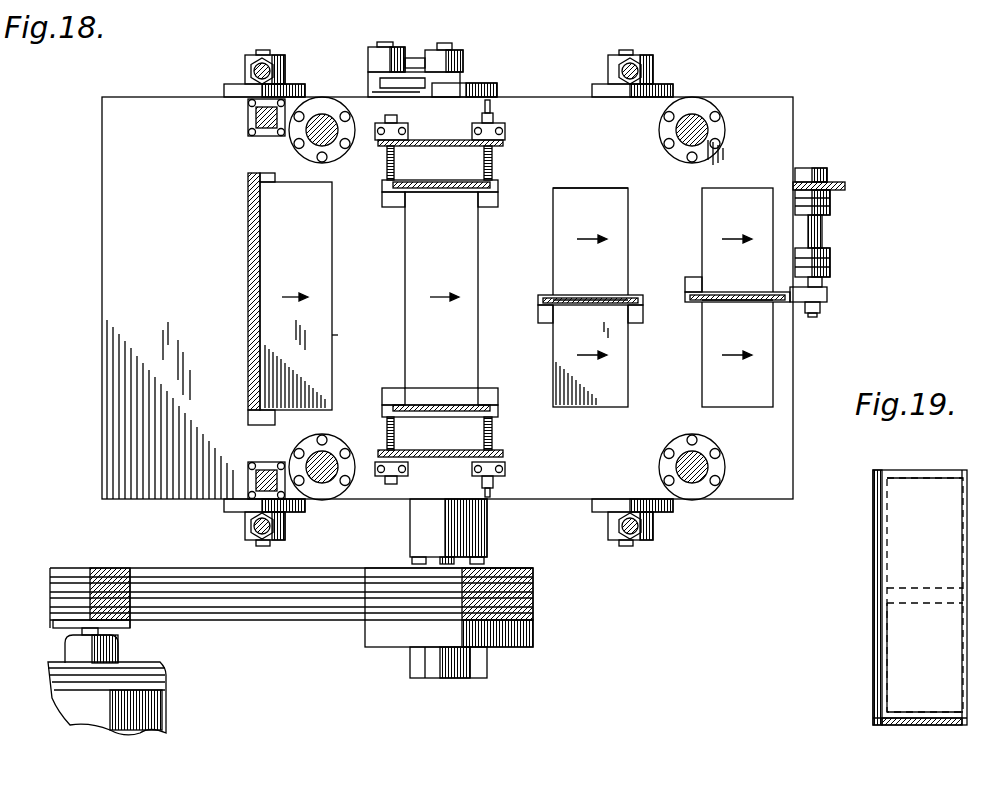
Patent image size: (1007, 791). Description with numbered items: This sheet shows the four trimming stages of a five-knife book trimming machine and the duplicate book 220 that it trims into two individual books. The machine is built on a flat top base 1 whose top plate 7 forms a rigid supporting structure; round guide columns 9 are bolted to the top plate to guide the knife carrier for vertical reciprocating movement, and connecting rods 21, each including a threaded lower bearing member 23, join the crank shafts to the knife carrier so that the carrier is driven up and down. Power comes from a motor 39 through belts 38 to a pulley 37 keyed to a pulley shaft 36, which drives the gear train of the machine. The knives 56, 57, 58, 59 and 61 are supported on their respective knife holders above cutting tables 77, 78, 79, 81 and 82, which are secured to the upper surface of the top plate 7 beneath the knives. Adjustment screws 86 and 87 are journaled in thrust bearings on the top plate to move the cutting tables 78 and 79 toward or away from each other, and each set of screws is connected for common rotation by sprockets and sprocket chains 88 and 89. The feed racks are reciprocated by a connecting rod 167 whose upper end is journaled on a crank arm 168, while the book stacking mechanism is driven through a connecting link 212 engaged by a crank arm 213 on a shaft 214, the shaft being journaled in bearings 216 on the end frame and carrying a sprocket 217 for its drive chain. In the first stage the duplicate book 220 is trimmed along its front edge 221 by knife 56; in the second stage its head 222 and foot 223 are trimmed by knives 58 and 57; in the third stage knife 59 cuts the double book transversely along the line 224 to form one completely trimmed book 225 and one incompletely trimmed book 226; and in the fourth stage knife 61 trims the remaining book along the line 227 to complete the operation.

In FIG. 18, the flat top base 1 is at (102, 160).
In FIG. 18, the top plate 7 is at (125, 199).
In FIG. 18, the guide columns 9 is at (320, 117).
In FIG. 18, the connecting rods 21 is at (250, 72).
In FIG. 18, the lower bearing member 23 is at (245, 62).
In FIG. 18, the pulley shaft 36 is at (440, 556).
In FIG. 18, the pulley 37 is at (535, 636).
In FIG. 18, the belts 38 is at (305, 610).
In FIG. 18, the motor 39 is at (165, 708).
In FIG. 18, the knife 56 is at (255, 293).
In FIG. 18, the knife 57 is at (450, 382).
In FIG. 18, the knife 58 is at (413, 192).
In FIG. 18, the knife 59 is at (581, 300).
In FIG. 18, the knife 61 is at (730, 293).
In FIG. 18, the cutting table 77 is at (250, 340).
In FIG. 18, the cutting table 78 is at (490, 392).
In FIG. 18, the cutting table 79 is at (490, 207).
In FIG. 18, the cutting table 81 is at (545, 318).
In FIG. 18, the cutting table 82 is at (688, 290).
In FIG. 18, the adjustment screws 86 is at (484, 432).
In FIG. 18, the adjustment screws 87 is at (484, 163).
In FIG. 18, the sprockets and sprocket chain 88 is at (445, 458).
In FIG. 18, the sprockets and sprocket chain 89 is at (432, 142).
In FIG. 18, the connecting rod 167 is at (415, 60).
In FIG. 18, the crank arm 168 is at (368, 85).
In FIG. 18, the connecting link 212 is at (822, 305).
In FIG. 18, the crank arm 213 is at (830, 294).
In FIG. 18, the shaft 214 is at (824, 232).
In FIG. 18, the bearings 216 is at (832, 204).
In FIG. 18, the sprocket 217 is at (846, 184).
In FIG. 18, the duplicate book 220 is at (356, 336).
In FIG. 19, the duplicate book 220 is at (968, 490).
In FIG. 19, the front edge 221 is at (887, 571).
In FIG. 19, the head 222 is at (918, 470).
In FIG. 19, the foot 223 is at (920, 715).
In FIG. 19, the line 224 is at (895, 603).
In FIG. 18, the completely trimmed book 225 is at (705, 204).
In FIG. 19, the completely trimmed book 225 is at (882, 661).
In FIG. 18, the incompletely trimmed book 226 is at (603, 170).
In FIG. 19, the line 227 is at (900, 588).